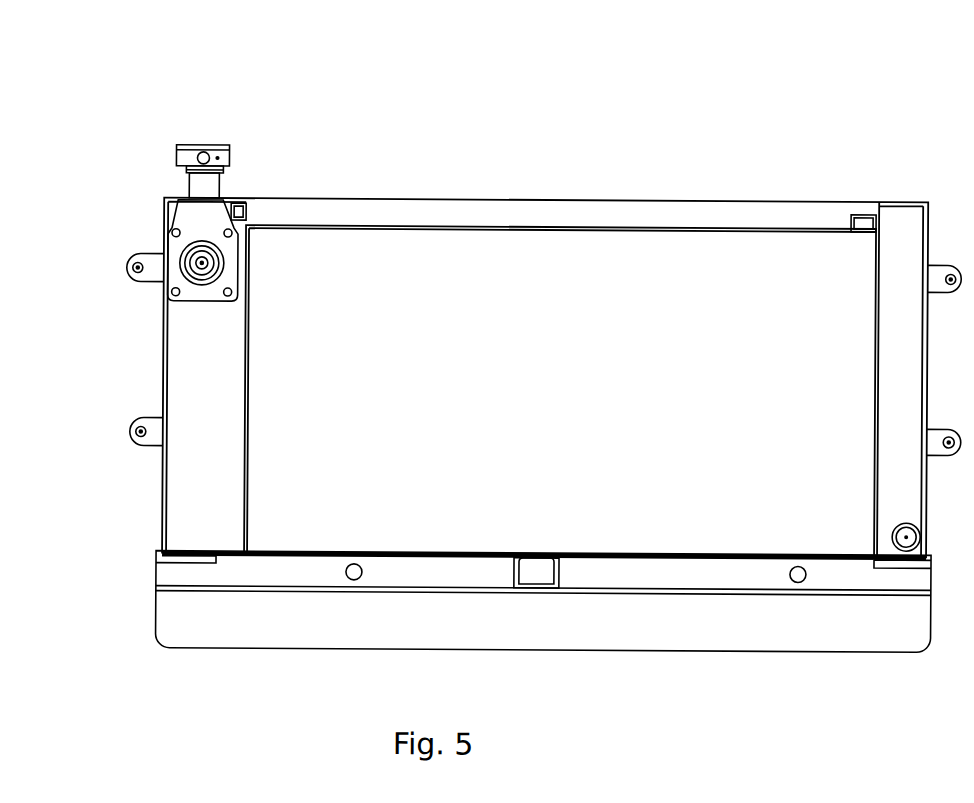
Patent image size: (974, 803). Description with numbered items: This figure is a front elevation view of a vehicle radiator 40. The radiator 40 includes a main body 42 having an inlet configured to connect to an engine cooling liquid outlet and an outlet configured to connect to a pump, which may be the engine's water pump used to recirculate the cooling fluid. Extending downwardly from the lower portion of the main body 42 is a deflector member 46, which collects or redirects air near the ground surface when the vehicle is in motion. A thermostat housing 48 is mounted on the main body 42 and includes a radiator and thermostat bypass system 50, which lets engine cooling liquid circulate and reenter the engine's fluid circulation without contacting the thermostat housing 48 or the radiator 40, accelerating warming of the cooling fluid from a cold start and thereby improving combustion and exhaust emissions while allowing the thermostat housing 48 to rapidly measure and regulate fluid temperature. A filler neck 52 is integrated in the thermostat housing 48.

The radiator 40 is at (708, 150).
The main body 42 is at (560, 391).
The deflector member 46 is at (648, 622).
The thermostat housing 48 is at (201, 213).
The radiator and thermostat bypass system 50 is at (863, 218).
The filler neck 52 is at (228, 147).